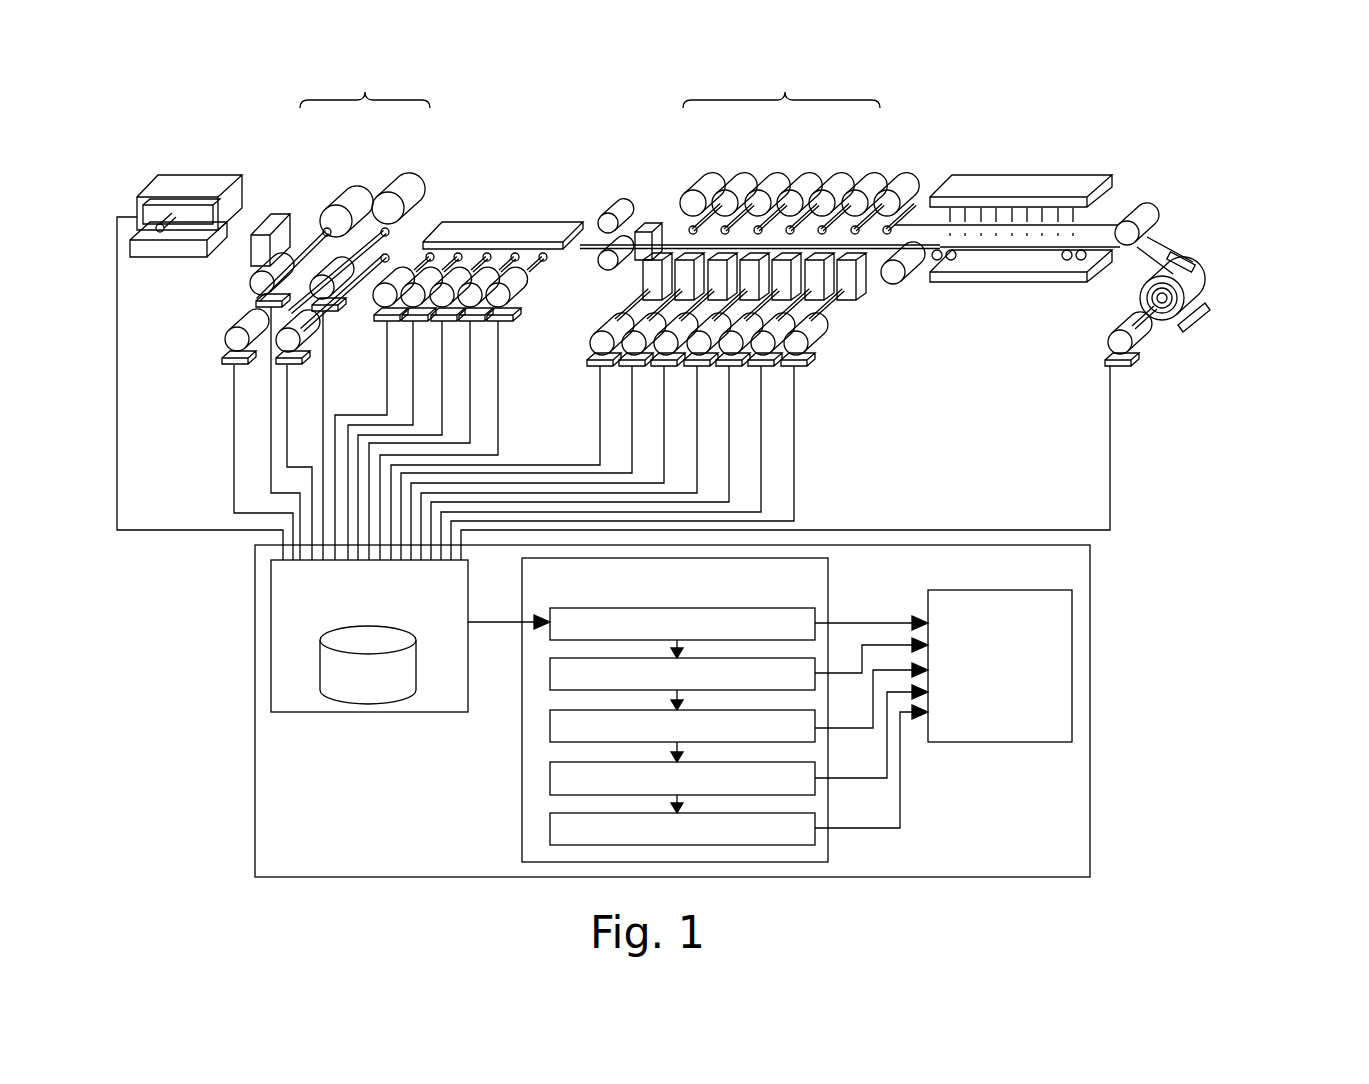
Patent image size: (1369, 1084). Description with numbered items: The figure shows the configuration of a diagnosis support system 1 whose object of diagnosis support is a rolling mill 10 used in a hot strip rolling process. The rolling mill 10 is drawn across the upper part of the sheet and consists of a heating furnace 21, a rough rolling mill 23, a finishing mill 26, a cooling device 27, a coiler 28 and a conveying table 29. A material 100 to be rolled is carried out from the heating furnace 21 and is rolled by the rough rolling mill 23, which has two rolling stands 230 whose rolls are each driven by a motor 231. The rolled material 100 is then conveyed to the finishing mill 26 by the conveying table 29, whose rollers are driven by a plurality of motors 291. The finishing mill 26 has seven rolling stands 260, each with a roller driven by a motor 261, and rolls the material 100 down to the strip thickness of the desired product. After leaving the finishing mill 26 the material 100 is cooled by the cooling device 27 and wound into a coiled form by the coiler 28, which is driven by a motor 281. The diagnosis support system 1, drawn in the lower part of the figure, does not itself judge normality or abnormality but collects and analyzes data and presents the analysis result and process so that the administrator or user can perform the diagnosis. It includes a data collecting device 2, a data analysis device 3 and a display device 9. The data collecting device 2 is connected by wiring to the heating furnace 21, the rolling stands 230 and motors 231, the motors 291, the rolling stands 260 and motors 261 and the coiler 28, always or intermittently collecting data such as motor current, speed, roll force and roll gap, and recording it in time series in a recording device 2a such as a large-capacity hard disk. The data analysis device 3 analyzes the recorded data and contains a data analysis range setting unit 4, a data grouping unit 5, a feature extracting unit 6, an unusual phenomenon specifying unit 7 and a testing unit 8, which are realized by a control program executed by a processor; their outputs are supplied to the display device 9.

The diagnosis support system 1 is at (1092, 582).
The data collecting device 2 is at (254, 602).
The recording device 2a is at (320, 668).
The data analysis device 3 is at (828, 580).
The data analysis range setting unit 4 is at (558, 608).
The data grouping unit 5 is at (550, 674).
The feature extracting unit 6 is at (550, 724).
The unusual phenomenon specifying unit 7 is at (550, 778).
The testing unit 8 is at (550, 829).
The display device 9 is at (1072, 670).
The rolling mill 10 is at (597, 140).
The heating furnace 21 is at (182, 185).
The rough rolling mill 23 is at (340, 192).
The finishing mill 26 is at (760, 187).
The cooling device 27 is at (1023, 187).
The coiler 28 is at (1200, 280).
The conveying table 29 is at (541, 281).
The material to be rolled 100 is at (160, 226).
The rolling stand 230 is at (347, 203).
The motor 231 is at (222, 348).
The rolling stand 260 is at (715, 180).
The motor 261 is at (813, 335).
The motor 281 is at (1130, 347).
The motor 291 is at (511, 297).